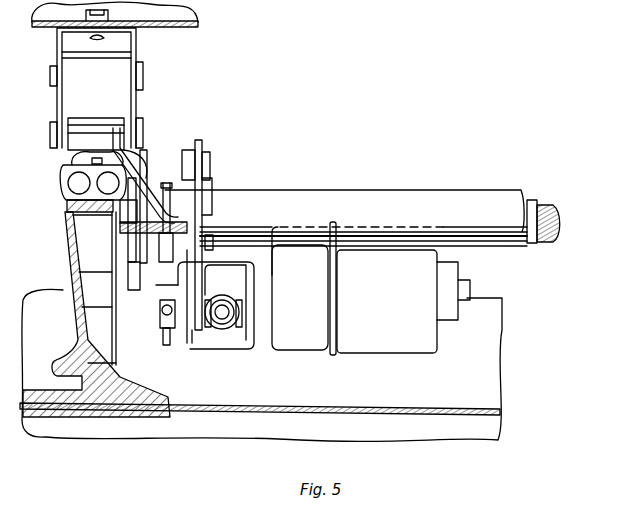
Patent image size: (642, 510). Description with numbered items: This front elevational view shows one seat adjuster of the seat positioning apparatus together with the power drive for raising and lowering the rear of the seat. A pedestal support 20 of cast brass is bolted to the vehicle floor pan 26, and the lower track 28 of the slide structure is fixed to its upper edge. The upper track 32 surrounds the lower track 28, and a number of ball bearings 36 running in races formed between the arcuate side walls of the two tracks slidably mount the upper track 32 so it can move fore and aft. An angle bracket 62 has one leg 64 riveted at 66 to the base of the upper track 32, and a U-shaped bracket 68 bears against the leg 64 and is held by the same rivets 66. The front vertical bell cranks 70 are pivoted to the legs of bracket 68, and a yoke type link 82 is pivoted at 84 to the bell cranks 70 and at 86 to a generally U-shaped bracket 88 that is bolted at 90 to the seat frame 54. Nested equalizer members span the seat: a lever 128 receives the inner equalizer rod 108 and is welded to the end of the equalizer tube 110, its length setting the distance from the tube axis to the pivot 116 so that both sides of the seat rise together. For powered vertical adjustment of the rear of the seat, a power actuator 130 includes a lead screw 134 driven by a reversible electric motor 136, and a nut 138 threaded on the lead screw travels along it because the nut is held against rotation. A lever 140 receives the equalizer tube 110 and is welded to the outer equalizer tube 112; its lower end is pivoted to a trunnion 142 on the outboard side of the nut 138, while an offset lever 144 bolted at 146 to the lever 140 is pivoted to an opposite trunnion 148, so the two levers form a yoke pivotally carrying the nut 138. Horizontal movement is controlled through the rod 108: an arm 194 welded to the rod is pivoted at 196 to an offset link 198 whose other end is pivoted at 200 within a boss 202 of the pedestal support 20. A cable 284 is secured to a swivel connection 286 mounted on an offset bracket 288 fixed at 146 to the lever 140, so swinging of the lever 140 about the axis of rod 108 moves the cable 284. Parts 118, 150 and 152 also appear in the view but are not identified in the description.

The pedestal support 20 is at (68, 238).
The vehicle floor pan 26 is at (482, 410).
The lower track 28 is at (72, 207).
The upper track 32 is at (72, 162).
The ball bearings 36 is at (75, 182).
The seat frame 54 is at (190, 16).
The angle bracket 62 is at (145, 155).
The leg 64 is at (50, 134).
The rivets 66 is at (98, 160).
The U-shaped bracket 68 is at (79, 135).
The front vertical bell cranks 70 is at (134, 105).
The yoke type link 82 is at (76, 74).
The pivot 84 is at (143, 127).
The pivot 86 is at (143, 70).
The U-shaped bracket 88 is at (134, 42).
The bolt 90 is at (96, 17).
The inner equalizer rod 108 is at (556, 222).
The equalizer tube 110 is at (530, 205).
The outer equalizer tube 112 is at (490, 200).
The pivot 116 is at (138, 242).
The plate 118 is at (145, 190).
The lever 128 is at (170, 226).
The power actuator 130 is at (240, 340).
The lead screw 134 is at (240, 300).
The reversible electric motor 136 is at (390, 348).
The nut 138 is at (222, 330).
The lever 140 is at (206, 194).
The trunnion 142 is at (196, 330).
The offset lever 144 is at (258, 268).
The bolt 146 is at (212, 232).
The trunnion 148 is at (242, 315).
The bar 150 is at (202, 142).
The pad 152 is at (210, 165).
The arm 194 is at (150, 270).
The pivot 196 is at (142, 320).
The offset link 198 is at (130, 300).
The pivot 200 is at (138, 288).
The boss 202 is at (88, 278).
The cable 284 is at (166, 345).
The swivel connection 286 is at (176, 330).
The offset bracket 288 is at (176, 284).